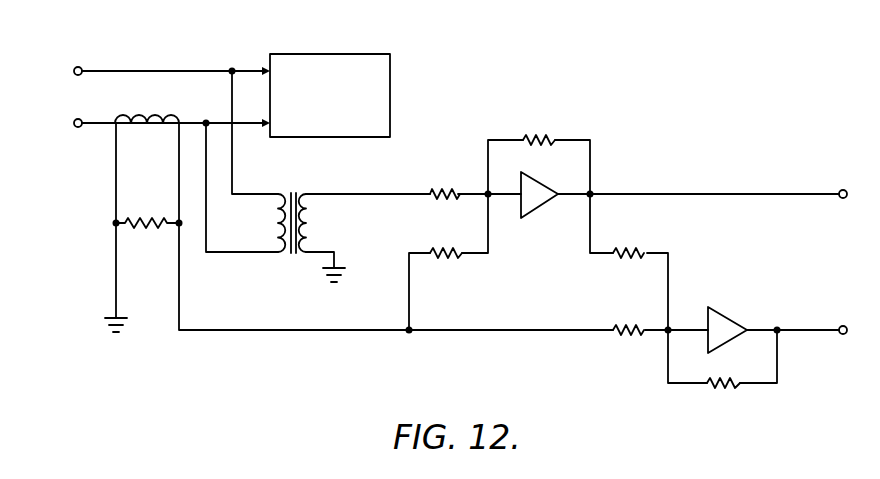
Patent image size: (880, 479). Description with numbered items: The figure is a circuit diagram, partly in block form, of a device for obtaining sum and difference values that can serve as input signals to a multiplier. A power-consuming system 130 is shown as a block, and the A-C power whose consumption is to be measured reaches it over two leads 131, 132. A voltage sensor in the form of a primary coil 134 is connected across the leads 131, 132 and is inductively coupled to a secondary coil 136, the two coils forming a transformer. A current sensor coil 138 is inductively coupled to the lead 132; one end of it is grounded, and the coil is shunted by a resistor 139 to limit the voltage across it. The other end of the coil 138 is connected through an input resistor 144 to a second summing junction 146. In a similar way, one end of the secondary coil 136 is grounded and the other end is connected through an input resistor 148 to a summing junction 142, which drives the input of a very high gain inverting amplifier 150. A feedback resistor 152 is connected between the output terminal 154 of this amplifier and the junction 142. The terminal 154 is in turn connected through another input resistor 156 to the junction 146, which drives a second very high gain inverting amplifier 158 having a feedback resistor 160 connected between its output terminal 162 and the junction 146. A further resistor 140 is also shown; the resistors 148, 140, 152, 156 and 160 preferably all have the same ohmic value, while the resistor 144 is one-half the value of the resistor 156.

The power-consuming system 130 is at (358, 54).
The lead 131 is at (114, 70).
The lead 132 is at (99, 126).
The primary coil 134 is at (277, 224).
The secondary coil 136 is at (309, 231).
The current sensor coil 138 is at (154, 112).
The resistor 139 is at (154, 227).
The resistor 140 is at (440, 258).
The summing junction 142 is at (487, 191).
The input resistor 144 is at (631, 325).
The second summing junction 146 is at (666, 334).
The input resistor 148 is at (439, 190).
The inverting amplifier 150 is at (541, 205).
The feedback resistor 152 is at (554, 139).
The output terminal 154 is at (843, 188).
The input resistor 156 is at (633, 250).
The inverting amplifier 158 is at (733, 318).
The feedback resistor 160 is at (722, 386).
The output terminal 162 is at (845, 325).